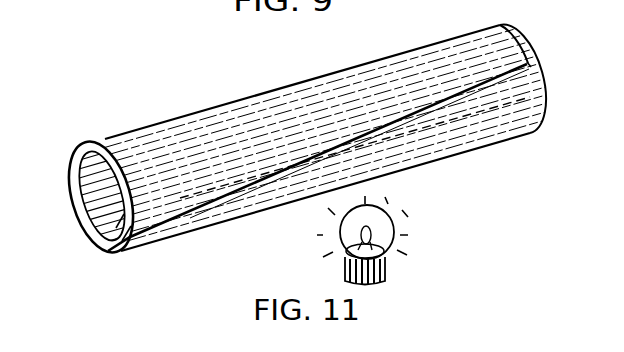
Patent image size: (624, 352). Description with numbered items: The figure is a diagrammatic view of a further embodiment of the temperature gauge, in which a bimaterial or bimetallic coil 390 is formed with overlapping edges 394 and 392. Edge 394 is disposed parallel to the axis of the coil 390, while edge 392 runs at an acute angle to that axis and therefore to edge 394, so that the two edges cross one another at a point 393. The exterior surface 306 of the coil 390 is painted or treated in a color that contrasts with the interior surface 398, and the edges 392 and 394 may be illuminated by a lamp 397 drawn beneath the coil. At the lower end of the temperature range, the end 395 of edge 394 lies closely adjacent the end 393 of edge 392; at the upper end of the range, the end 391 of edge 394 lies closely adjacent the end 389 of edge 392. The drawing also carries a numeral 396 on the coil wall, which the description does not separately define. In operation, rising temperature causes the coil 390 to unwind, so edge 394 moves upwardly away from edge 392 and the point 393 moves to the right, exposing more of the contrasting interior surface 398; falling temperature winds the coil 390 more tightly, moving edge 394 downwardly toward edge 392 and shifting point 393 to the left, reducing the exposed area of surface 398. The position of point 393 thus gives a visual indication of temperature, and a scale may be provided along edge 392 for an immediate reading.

The exterior surface 306 is at (413, 152).
The end of edge 392 389 is at (531, 69).
The bimetallic coil 390 is at (502, 24).
The end of edge 394 391 is at (532, 97).
The edge 392 is at (529, 62).
The point 393 is at (227, 189).
The edge 394 is at (115, 252).
The end of edge 394 395 is at (108, 251).
The sleeve wall 396 is at (272, 105).
The lamp 397 is at (345, 267).
The interior surface 398 is at (106, 141).